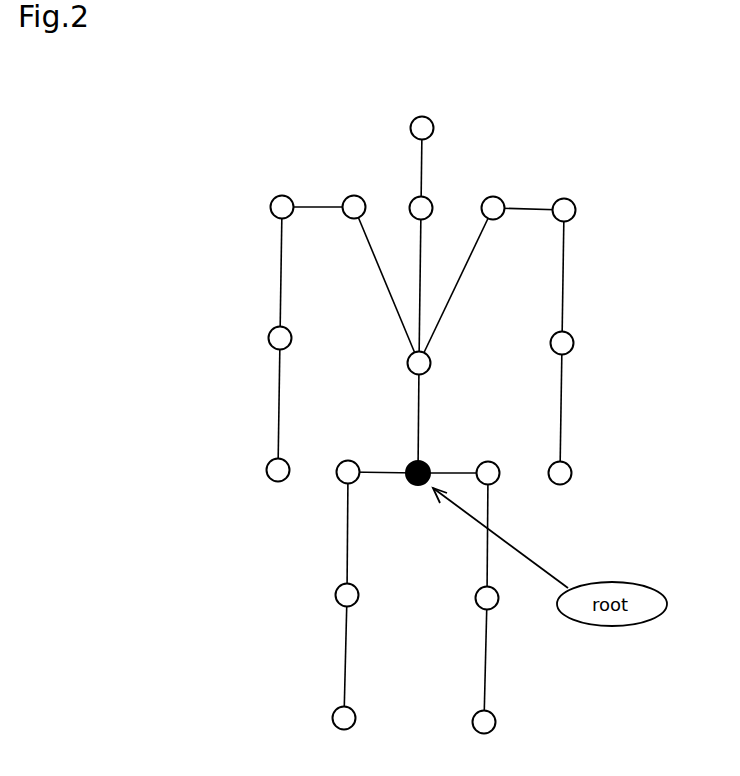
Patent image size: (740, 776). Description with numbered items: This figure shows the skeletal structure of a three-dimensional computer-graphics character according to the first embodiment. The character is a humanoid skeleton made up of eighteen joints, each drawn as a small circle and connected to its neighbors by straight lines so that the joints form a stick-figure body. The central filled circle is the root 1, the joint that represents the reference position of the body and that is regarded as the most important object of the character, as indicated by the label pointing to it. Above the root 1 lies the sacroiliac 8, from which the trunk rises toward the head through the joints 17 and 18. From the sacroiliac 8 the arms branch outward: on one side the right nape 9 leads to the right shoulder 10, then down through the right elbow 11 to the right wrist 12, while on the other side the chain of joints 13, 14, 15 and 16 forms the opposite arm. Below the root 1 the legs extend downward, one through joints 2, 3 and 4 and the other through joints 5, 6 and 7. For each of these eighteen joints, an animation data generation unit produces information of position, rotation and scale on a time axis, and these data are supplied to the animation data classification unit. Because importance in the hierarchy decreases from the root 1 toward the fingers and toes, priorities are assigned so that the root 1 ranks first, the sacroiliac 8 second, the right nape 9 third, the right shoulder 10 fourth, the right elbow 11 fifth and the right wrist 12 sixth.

The root 1 is at (424, 462).
The joint 2 is at (340, 473).
The joint 3 is at (338, 597).
The joint 4 is at (336, 720).
The joint 5 is at (499, 475).
The joint 6 is at (497, 600).
The joint 7 is at (494, 724).
The sacroiliac 8 is at (429, 364).
The right nape 9 is at (354, 194).
The right shoulder 10 is at (267, 208).
The right elbow 11 is at (265, 339).
The right wrist 12 is at (263, 471).
The joint 13 is at (496, 195).
The joint 14 is at (579, 210).
The joint 15 is at (578, 344).
The joint 16 is at (575, 474).
The joint 17 is at (436, 208).
The joint 18 is at (438, 129).